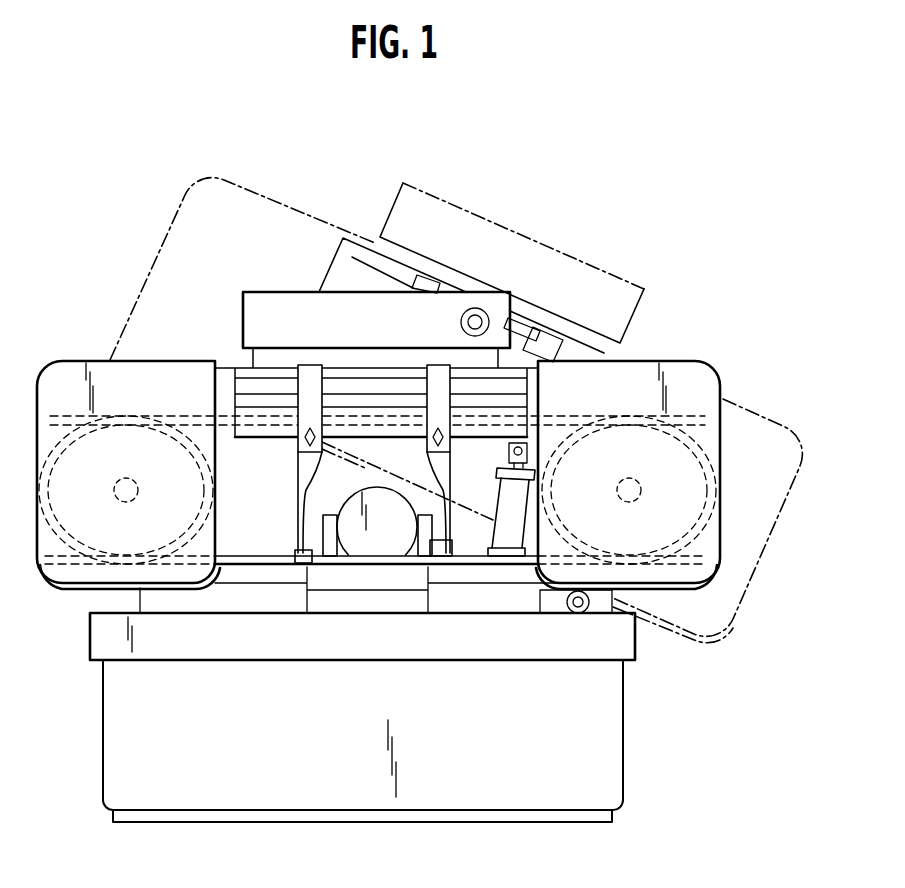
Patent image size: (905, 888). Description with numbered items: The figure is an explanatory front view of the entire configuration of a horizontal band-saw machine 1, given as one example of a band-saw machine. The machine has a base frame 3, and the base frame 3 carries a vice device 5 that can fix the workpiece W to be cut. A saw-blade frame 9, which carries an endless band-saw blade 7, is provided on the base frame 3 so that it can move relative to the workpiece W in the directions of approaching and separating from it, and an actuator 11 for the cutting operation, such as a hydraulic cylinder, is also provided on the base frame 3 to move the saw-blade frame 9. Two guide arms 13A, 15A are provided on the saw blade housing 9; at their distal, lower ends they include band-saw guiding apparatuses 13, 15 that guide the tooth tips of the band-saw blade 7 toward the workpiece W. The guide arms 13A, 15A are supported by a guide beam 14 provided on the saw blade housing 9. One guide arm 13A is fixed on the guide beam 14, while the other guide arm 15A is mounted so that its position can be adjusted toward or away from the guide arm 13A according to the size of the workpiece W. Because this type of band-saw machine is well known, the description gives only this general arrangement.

The band-saw machine 1 is at (681, 338).
The base frame 3 is at (608, 702).
The vice device 5 is at (324, 509).
The endless band-saw blade 7 is at (246, 568).
The saw-blade frame 9 is at (711, 353).
The actuator 11 is at (510, 538).
The band-saw guiding apparatus 13 is at (438, 563).
The guide arm 13A is at (438, 377).
The guide beam 14 is at (247, 387).
The band-saw guiding apparatus 15 is at (293, 566).
The guide arm 15A is at (311, 377).
The workpiece W is at (383, 497).